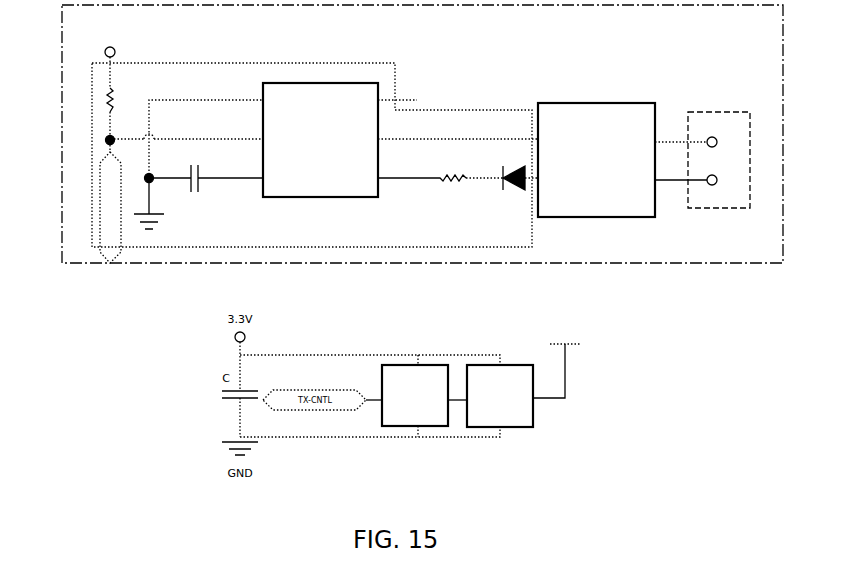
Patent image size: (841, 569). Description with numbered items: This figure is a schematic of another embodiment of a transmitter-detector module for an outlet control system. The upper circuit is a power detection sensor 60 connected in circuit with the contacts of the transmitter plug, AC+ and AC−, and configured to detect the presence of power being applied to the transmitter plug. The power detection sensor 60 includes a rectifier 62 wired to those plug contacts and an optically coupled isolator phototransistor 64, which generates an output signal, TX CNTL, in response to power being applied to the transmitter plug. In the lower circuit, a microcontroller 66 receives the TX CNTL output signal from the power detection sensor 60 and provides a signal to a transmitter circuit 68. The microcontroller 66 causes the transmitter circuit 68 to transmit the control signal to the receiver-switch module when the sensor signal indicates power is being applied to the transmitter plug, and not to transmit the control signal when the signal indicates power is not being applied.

The power detection sensor 60 is at (63, 153).
The rectifier 62 is at (596, 160).
The optically coupled isolator phototransistor 64 is at (329, 133).
The microcontroller 66 is at (415, 395).
The transmitter circuit 68 is at (500, 396).